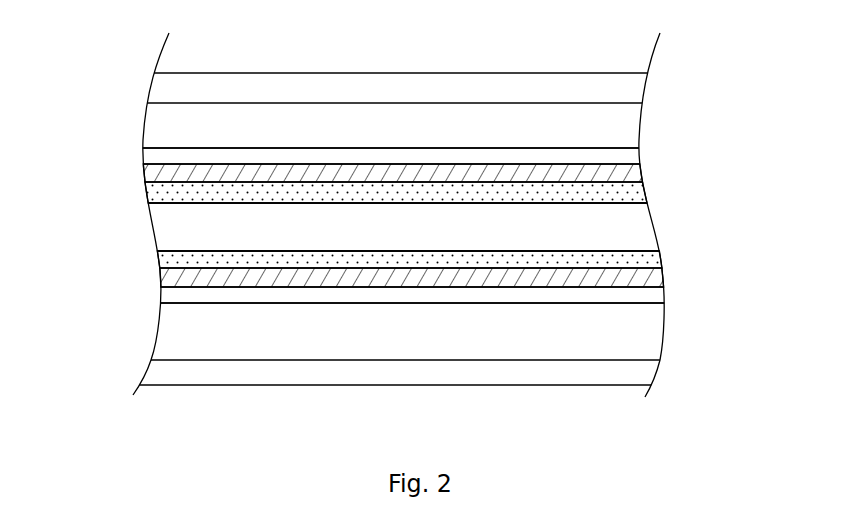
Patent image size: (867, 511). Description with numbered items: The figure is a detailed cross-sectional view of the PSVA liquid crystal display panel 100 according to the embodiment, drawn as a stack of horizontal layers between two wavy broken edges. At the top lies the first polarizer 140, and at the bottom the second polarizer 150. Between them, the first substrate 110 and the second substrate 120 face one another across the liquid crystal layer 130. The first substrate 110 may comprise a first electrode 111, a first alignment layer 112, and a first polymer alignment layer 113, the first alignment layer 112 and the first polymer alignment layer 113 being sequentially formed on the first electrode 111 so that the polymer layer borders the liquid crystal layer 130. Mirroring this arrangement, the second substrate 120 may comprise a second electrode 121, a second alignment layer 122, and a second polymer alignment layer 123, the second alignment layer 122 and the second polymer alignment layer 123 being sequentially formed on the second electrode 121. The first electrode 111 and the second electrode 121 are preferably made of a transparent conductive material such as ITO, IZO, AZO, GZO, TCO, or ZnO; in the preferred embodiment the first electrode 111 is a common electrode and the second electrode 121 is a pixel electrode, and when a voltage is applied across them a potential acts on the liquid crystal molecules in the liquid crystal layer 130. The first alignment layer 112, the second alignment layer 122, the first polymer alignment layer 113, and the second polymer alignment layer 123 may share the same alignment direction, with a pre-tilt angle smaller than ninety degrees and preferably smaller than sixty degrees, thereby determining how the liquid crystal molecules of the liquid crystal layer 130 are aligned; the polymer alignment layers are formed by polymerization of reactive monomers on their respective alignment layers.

The liquid crystal display panel 100 is at (103, 270).
The first substrate 110 is at (727, 108).
The first electrode 111 is at (640, 154).
The first alignment layer 112 is at (637, 173).
The first polymer alignment layer 113 is at (638, 193).
The second substrate 120 is at (737, 240).
The second electrode 121 is at (653, 295).
The second alignment layer 122 is at (652, 275).
The second polymer alignment layer 123 is at (652, 262).
The liquid crystal layer 130 is at (615, 222).
The first polarizer 140 is at (622, 82).
The second polarizer 150 is at (615, 370).